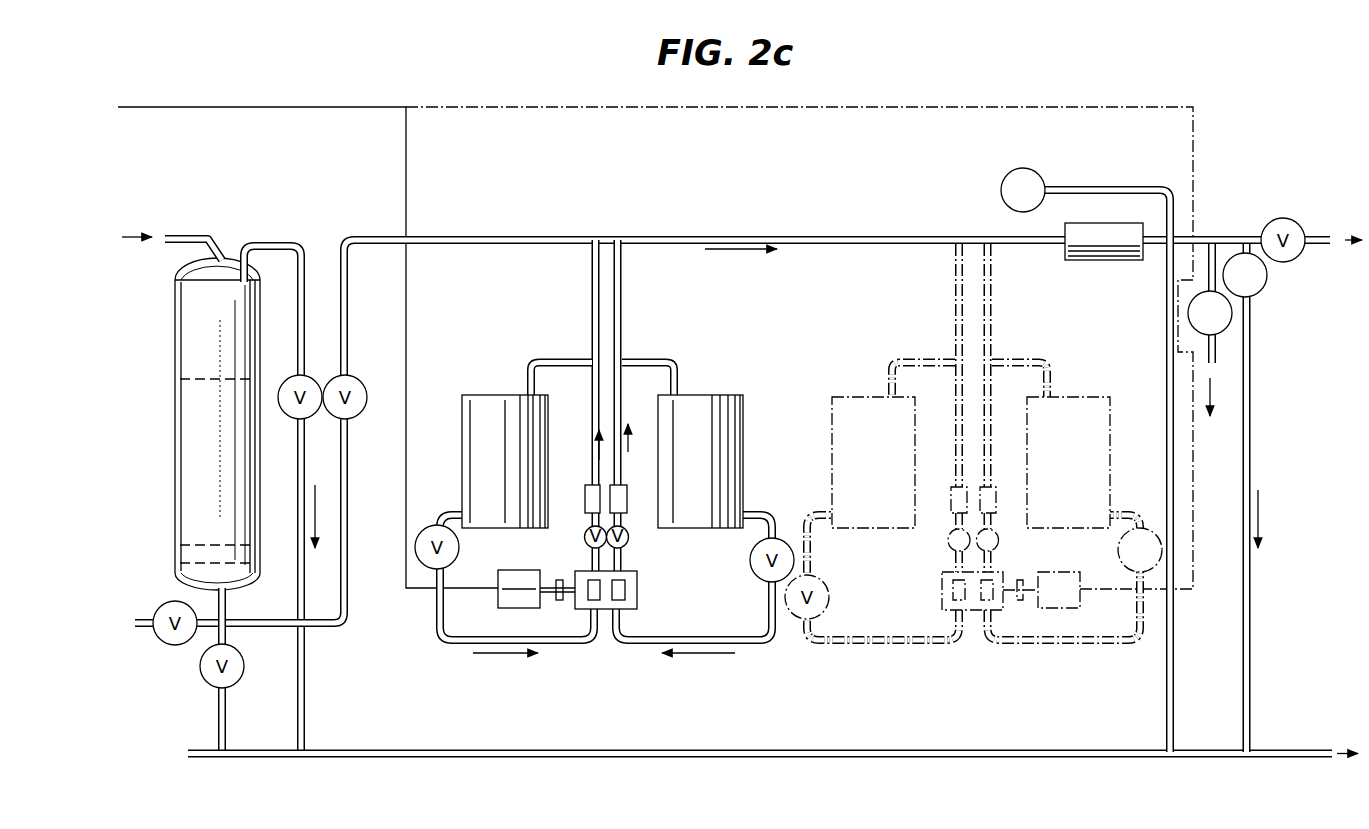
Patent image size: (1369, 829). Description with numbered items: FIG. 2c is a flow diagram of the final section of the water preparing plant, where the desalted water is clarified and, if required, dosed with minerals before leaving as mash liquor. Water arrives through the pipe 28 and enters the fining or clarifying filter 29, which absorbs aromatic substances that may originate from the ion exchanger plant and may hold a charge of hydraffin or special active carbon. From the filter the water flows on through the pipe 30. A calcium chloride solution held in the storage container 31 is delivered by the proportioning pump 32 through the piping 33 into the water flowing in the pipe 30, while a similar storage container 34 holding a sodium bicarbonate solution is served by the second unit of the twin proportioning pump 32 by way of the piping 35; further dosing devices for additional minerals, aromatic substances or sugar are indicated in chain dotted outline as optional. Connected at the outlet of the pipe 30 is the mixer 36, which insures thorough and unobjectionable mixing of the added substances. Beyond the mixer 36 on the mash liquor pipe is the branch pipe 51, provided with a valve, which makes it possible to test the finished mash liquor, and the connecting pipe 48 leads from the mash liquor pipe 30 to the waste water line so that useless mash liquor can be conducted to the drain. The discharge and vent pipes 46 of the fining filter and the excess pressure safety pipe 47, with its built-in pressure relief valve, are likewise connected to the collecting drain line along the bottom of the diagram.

The pipe 28 is at (188, 236).
The fining or clarifying filter 29 is at (186, 357).
The pipe 30 is at (462, 246).
The storage container 31 is at (470, 412).
The proportioning pump 32 is at (638, 597).
The piping 33 is at (592, 323).
The storage container 34 is at (742, 443).
The piping 35 is at (622, 318).
The mixer 36 is at (1083, 259).
The discharge and vent pipes 46 is at (297, 722).
The excess pressure safety pipe 47 is at (1167, 700).
The connecting pipe 48 is at (1251, 668).
The branch pipe 51 is at (1218, 352).